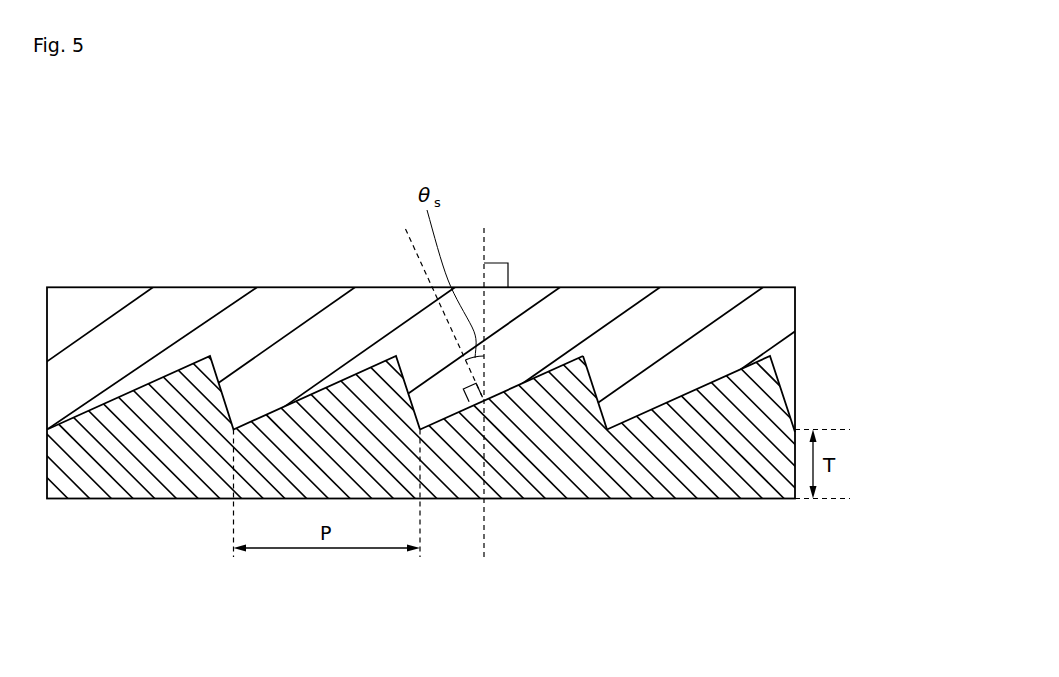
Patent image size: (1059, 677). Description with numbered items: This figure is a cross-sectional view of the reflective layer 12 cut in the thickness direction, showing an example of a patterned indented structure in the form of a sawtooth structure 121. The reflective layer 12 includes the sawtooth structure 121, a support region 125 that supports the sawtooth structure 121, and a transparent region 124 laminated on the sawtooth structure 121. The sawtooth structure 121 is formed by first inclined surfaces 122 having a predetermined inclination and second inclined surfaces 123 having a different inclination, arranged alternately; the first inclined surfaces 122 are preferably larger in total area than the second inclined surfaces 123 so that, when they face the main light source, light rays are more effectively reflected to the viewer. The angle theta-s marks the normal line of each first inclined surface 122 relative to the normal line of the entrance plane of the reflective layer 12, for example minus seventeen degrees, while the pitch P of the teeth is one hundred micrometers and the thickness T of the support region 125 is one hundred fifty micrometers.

The reflective layer 12 is at (749, 254).
The sawtooth structure 121 is at (782, 393).
The first inclined surface 122 is at (448, 417).
The second inclined surface 123 is at (597, 383).
The transparent region 124 is at (785, 323).
The support region 125 is at (693, 482).